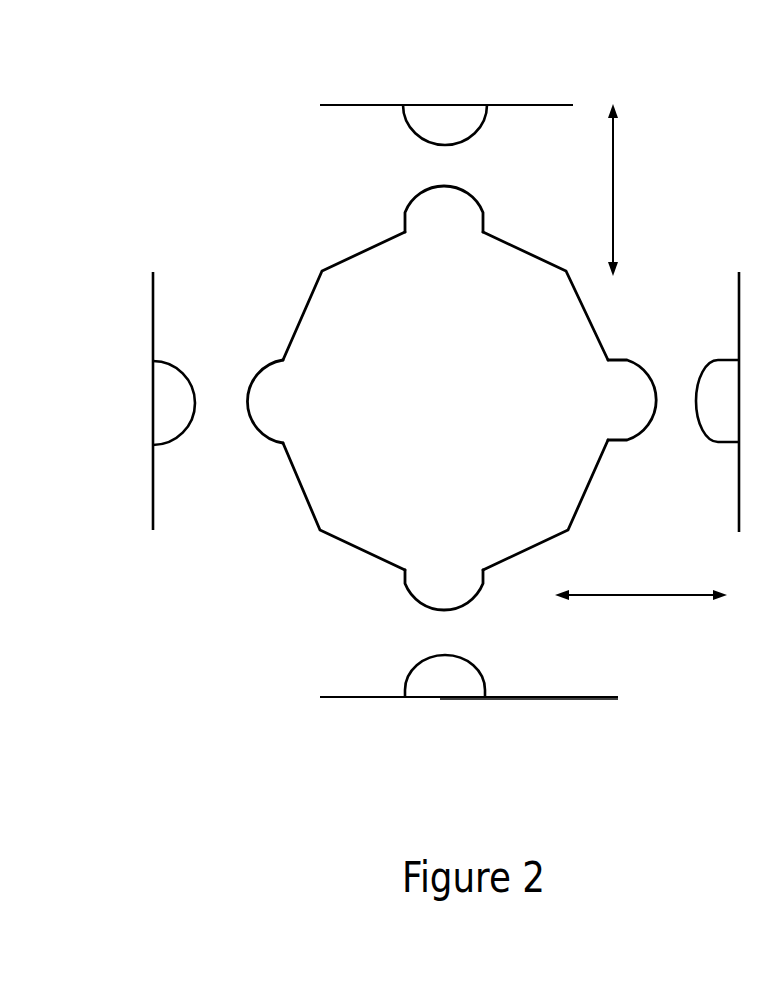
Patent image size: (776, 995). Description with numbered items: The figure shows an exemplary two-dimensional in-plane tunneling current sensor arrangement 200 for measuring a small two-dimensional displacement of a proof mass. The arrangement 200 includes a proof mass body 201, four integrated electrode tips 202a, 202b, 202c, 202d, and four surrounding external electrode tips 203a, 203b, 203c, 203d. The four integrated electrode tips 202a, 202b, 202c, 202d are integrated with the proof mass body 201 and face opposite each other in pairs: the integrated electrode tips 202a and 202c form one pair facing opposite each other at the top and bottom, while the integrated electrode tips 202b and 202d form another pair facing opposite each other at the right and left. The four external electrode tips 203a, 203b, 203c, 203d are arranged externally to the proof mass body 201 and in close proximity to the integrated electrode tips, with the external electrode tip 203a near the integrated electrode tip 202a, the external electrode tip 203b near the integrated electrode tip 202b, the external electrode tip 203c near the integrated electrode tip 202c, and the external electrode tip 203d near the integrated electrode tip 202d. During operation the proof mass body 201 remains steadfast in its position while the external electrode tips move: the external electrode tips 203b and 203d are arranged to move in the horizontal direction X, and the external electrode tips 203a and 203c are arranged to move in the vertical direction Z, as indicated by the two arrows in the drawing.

The two-dimensional in-plane tunneling current sensor arrangement 200 is at (135, 107).
The proof mass body 201 is at (445, 401).
The integrated electrode tip 202a is at (476, 214).
The integrated electrode tip 202b is at (650, 436).
The integrated electrode tip 202c is at (406, 583).
The integrated electrode tip 202d is at (257, 362).
The external electrode tip 203a is at (410, 135).
The external electrode tip 203b is at (718, 360).
The external electrode tip 203c is at (478, 666).
The external electrode tip 203d is at (178, 433).